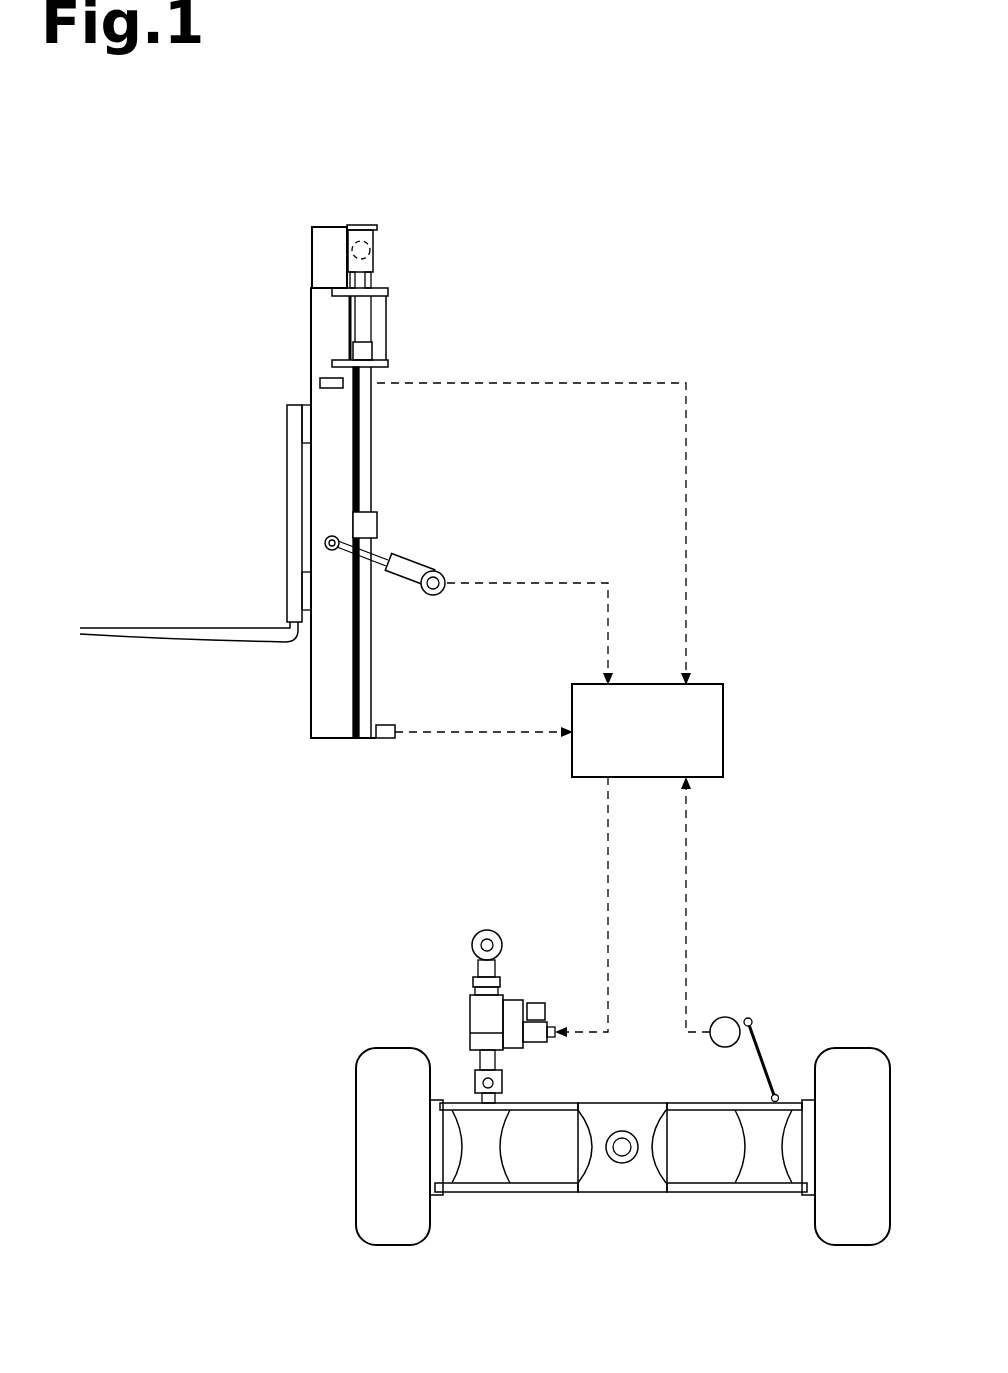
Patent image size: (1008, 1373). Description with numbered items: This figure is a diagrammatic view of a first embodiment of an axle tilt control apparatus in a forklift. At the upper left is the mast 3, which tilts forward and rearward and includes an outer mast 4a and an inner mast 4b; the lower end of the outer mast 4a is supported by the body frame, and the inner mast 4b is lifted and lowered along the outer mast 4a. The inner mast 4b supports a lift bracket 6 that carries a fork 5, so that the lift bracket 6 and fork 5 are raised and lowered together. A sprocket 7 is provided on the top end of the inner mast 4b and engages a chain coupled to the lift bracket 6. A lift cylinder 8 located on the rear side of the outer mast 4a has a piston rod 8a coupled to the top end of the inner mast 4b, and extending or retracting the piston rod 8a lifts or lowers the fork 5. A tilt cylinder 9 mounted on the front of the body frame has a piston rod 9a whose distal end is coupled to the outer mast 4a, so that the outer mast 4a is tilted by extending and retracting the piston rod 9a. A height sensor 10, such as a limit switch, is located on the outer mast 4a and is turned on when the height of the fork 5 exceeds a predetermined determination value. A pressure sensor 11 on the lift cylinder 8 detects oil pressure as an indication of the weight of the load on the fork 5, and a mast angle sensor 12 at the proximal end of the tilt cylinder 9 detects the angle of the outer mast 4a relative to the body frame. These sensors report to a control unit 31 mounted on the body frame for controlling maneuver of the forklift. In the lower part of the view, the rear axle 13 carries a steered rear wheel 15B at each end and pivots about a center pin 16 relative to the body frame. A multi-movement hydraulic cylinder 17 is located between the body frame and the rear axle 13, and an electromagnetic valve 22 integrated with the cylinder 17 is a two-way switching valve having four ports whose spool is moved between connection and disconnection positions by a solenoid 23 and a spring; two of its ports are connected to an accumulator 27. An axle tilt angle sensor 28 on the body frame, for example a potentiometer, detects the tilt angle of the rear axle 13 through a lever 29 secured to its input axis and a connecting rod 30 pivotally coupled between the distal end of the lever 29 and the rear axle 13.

The mast 3 is at (258, 287).
The outer mast 4a is at (310, 312).
The inner mast 4b is at (312, 253).
The fork 5 is at (148, 627).
The lift bracket 6 is at (287, 503).
The sprocket 7 is at (377, 233).
The lift cylinder 8 is at (372, 441).
The piston rod 8a is at (387, 321).
The tilt cylinder 9 is at (415, 558).
The piston rod 9a is at (378, 550).
The height sensor 10 is at (318, 382).
The pressure sensor 11 is at (383, 725).
The mast angle sensor 12 is at (448, 572).
The rear axle 13 is at (672, 1223).
The rear wheel 15B is at (400, 1230).
The center pin 16 is at (617, 1163).
The multi-movement hydraulic cylinder 17 is at (468, 1013).
The electromagnetic valve 22 is at (537, 1048).
The solenoid 23 is at (555, 1050).
The accumulator 27 is at (537, 998).
The axle tilt angle sensor 28 is at (717, 1017).
The lever 29 is at (752, 1019).
The connecting rod 30 is at (762, 1063).
The control unit 31 is at (723, 703).